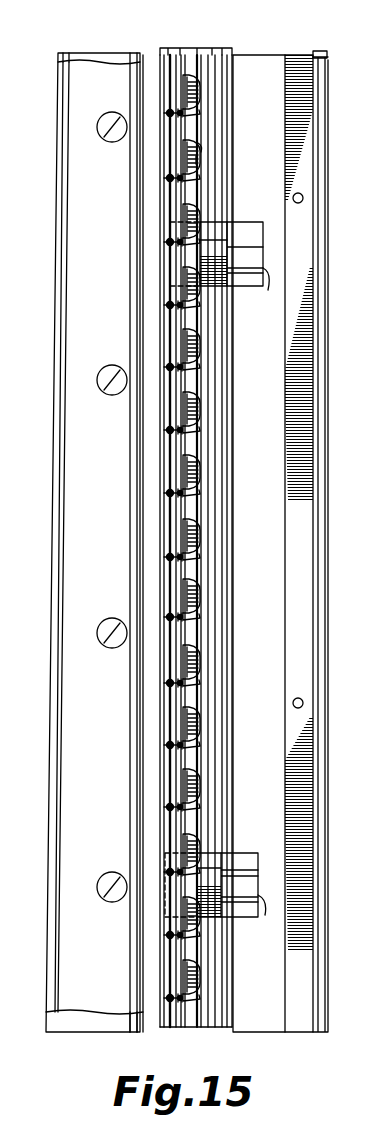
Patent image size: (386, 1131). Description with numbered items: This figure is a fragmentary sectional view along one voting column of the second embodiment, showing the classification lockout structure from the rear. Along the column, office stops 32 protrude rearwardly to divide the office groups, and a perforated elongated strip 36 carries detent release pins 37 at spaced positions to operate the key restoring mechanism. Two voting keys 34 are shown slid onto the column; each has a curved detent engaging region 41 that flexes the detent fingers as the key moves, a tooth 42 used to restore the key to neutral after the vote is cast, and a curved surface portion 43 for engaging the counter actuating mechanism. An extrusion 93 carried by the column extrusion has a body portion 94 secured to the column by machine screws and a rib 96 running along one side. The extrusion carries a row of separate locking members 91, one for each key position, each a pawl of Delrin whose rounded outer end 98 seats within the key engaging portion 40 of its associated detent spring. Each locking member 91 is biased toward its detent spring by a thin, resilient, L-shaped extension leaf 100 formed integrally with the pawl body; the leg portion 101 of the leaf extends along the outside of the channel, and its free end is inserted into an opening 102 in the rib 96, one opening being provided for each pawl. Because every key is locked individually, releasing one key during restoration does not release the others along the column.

The office stop 32 is at (200, 160).
The voting key 34 is at (263, 246).
The perforated elongated strip 36 is at (303, 55).
The detent release pin 37 is at (302, 196).
The key engaging portion 40 is at (197, 76).
The detent engaging region 41 is at (215, 272).
The tooth 42 is at (270, 603).
The curved surface portion 43 is at (218, 232).
The locking member 91 is at (200, 92).
The extrusion 93 is at (193, 72).
The body portion 94 is at (60, 193).
The rib 96 is at (177, 80).
The rounded outer end 98 is at (200, 148).
The extension leaf 100 is at (192, 175).
The leg portion 101 is at (167, 179).
The opening 102 is at (177, 183).